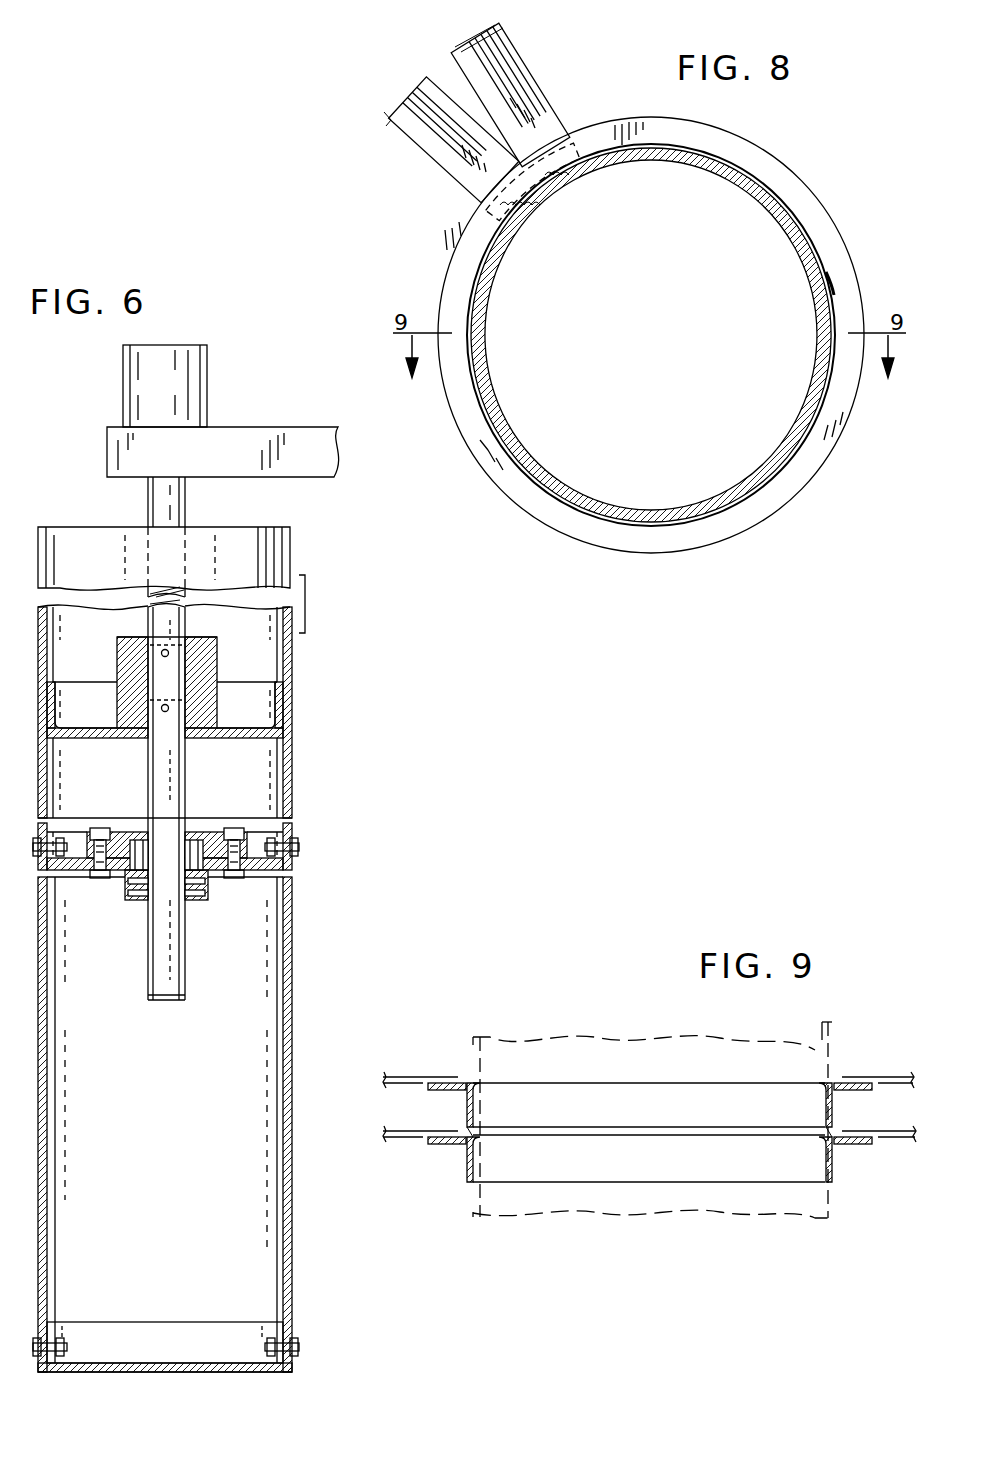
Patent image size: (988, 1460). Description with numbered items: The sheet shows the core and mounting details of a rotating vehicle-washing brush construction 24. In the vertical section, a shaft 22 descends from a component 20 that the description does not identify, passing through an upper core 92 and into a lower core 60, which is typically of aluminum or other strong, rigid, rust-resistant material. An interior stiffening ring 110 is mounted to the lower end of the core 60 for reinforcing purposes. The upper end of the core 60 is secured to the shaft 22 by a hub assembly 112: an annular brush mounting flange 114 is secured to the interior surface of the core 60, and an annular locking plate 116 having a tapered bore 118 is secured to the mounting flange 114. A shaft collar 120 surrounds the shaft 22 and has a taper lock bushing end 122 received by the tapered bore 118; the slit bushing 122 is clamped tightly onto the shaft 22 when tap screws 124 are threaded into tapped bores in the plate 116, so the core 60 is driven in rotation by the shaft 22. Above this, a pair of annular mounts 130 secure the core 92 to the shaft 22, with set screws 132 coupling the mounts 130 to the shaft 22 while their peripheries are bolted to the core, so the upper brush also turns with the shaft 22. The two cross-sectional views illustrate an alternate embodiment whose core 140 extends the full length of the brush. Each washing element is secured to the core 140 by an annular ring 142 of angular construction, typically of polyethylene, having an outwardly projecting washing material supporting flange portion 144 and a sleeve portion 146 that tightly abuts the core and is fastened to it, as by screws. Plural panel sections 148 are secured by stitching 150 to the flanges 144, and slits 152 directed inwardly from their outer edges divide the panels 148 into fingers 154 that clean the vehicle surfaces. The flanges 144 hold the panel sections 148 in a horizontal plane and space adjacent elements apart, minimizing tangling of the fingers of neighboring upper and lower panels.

In FIG. 6, the support plate 20 is at (305, 427).
In FIG. 6, the shaft 22 is at (178, 499).
In FIG. 6, the brush construction 24 is at (200, 373).
In FIG. 6, the core 60 is at (291, 982).
In FIG. 6, the core 92 is at (291, 784).
In FIG. 6, the interior stiffening ring 110 is at (276, 1322).
In FIG. 6, the hub assembly 112 is at (137, 915).
In FIG. 6, the annular brush mounting flange 114 is at (256, 872).
In FIG. 6, the annular locking plate 116 is at (200, 850).
In FIG. 6, the tapered bore 118 is at (180, 848).
In FIG. 6, the shaft collar 120 is at (122, 900).
In FIG. 6, the taper lock bushing end 122 is at (140, 845).
In FIG. 6, the tap screws 124 is at (126, 884).
In FIG. 6, the annular mounts 130 is at (258, 742).
In FIG. 6, the set screws 132 is at (170, 708).
In FIG. 8, the core 140 is at (679, 335).
In FIG. 9, the core 140 is at (818, 1028).
In FIG. 8, the annular ring 142 is at (830, 249).
In FIG. 9, the annular ring 142 is at (838, 1160).
In FIG. 8, the flange portion 144 is at (805, 208).
In FIG. 9, the flange portion 144 is at (850, 1138).
In FIG. 8, the sleeve portion 146 is at (833, 283).
In FIG. 9, the sleeve portion 146 is at (830, 1176).
In FIG. 8, the panel sections 148 is at (538, 107).
In FIG. 9, the panel sections 148 is at (897, 1077).
In FIG. 8, the stitching 150 is at (543, 140).
In FIG. 8, the slits 152 is at (498, 40).
In FIG. 8, the fingers 154 is at (512, 66).